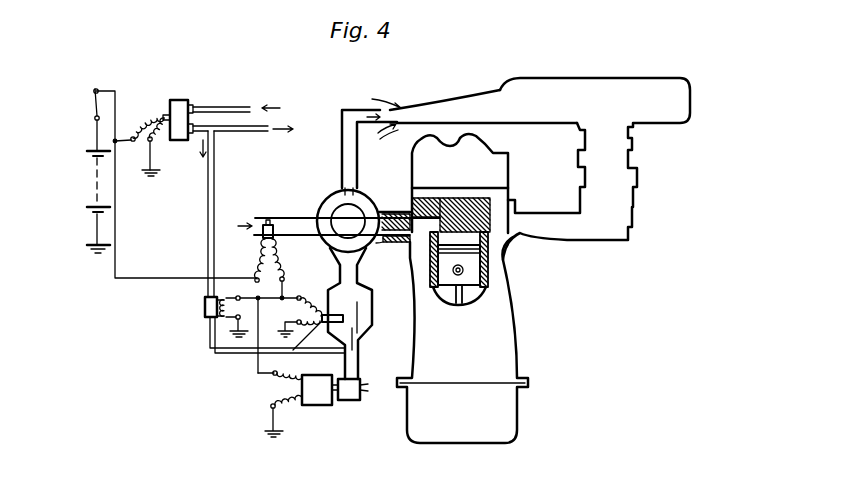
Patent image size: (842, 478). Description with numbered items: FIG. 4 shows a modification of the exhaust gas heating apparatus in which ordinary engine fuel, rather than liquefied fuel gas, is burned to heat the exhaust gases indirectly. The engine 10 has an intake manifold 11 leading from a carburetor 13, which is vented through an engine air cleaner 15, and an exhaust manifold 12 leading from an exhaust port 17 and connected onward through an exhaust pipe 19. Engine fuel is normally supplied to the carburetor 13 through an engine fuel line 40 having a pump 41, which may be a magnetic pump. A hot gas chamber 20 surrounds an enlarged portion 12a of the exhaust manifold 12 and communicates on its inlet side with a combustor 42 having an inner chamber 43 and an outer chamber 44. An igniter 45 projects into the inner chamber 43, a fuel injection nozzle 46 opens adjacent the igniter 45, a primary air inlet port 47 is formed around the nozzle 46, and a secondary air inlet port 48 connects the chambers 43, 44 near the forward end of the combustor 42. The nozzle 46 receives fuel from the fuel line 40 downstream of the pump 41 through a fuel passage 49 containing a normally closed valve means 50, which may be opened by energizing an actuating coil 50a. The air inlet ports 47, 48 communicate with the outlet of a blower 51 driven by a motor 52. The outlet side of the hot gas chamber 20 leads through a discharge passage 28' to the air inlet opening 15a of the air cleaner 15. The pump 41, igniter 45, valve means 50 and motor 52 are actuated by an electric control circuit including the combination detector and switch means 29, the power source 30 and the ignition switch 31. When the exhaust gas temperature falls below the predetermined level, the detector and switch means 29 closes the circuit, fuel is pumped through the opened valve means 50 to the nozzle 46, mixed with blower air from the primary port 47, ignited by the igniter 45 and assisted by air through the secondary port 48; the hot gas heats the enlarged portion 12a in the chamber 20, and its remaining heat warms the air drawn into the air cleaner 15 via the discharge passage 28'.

The engine 10 is at (468, 179).
The intake manifold 11 is at (542, 212).
The exhaust manifold 12 is at (393, 207).
The enlarged portion 12a is at (318, 207).
The carburetor 13 is at (638, 177).
The engine air cleaner 15 is at (622, 79).
The air inlet opening 15a is at (445, 100).
The exhaust port 17 is at (404, 246).
The exhaust pipe 19 is at (268, 218).
The hot gas chamber 20 is at (343, 192).
The discharge passage 28' is at (347, 139).
The combination detector and switch means 29 is at (263, 238).
The power source 30 is at (108, 183).
The ignition switch 31 is at (96, 88).
The engine fuel line 40 is at (231, 130).
The pump 41 is at (180, 100).
The combustor 42 is at (372, 313).
The inner chamber 43 is at (358, 305).
The outer chamber 44 is at (373, 333).
The igniter 45 is at (303, 350).
The fuel injection nozzle 46 is at (362, 388).
The primary air inlet port 47 is at (356, 346).
The secondary air inlet port 48 is at (327, 296).
The fuel passage 49 is at (208, 222).
The valve means 50 is at (205, 306).
The actuating coil 50a is at (210, 330).
The blower 51 is at (350, 401).
The motor 52 is at (315, 405).